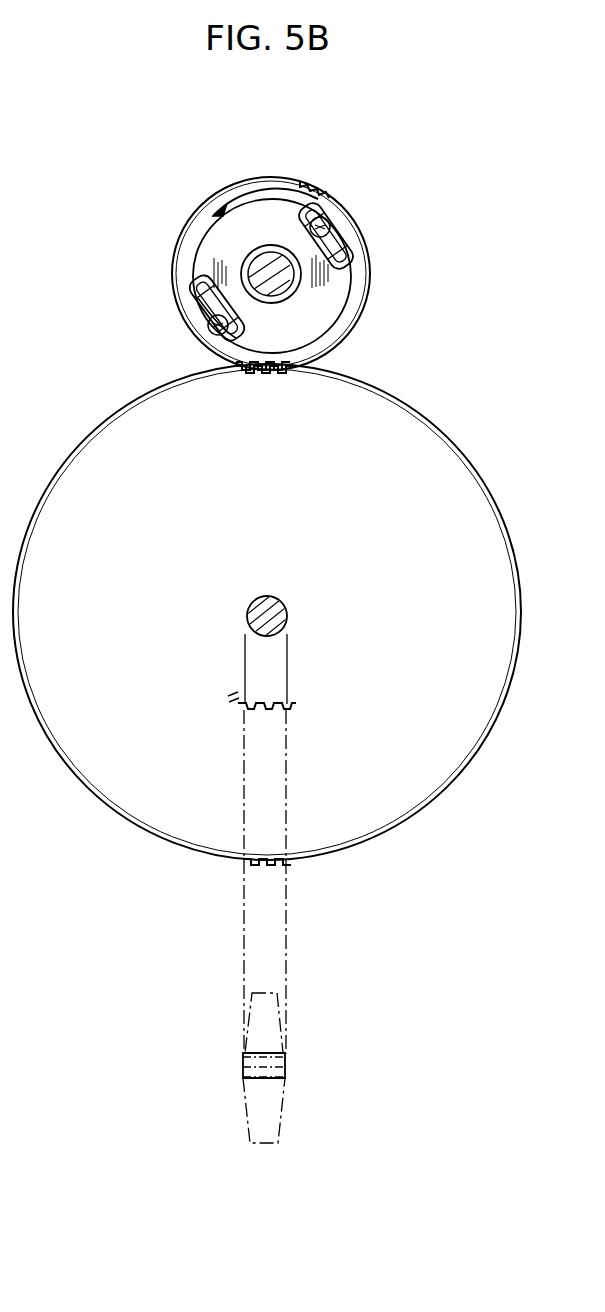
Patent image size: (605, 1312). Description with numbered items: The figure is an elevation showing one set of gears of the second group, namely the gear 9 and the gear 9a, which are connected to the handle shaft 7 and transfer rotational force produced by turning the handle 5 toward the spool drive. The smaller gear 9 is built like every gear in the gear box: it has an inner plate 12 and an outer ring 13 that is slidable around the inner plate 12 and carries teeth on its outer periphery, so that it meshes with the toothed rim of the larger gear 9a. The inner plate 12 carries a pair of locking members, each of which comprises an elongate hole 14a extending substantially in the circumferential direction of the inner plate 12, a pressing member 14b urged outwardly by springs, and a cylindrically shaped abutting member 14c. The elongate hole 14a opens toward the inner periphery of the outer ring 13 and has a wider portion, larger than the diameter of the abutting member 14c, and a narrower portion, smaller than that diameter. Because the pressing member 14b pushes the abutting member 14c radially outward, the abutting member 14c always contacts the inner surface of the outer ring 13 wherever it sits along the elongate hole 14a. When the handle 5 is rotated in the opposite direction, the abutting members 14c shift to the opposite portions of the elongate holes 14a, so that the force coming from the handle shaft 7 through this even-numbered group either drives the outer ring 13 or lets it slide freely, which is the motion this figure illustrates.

The handle 5 is at (277, 805).
The handle shaft 7 is at (247, 616).
The gear 9 is at (374, 237).
The gear 9a is at (420, 441).
The inner plate 12 is at (322, 303).
The outer ring 13 is at (278, 187).
The elongate hole 14a is at (206, 306).
The pressing member 14b is at (200, 338).
The abutting member 14c is at (232, 340).